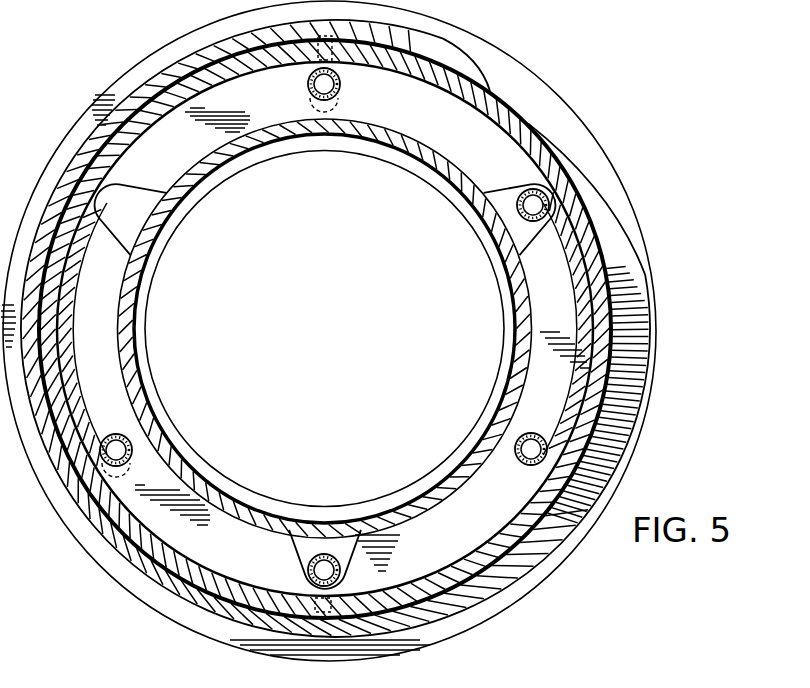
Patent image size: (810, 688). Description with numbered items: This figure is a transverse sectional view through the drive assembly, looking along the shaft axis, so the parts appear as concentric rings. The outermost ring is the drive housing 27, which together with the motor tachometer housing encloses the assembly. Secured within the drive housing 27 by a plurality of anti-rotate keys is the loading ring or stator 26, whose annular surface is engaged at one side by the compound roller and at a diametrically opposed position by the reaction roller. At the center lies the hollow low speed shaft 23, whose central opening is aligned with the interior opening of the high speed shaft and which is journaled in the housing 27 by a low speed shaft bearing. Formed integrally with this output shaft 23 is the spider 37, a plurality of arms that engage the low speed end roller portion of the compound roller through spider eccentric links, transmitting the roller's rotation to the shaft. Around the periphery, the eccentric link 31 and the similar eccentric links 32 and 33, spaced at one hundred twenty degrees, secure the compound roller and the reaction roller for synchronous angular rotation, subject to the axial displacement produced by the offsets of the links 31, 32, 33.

The hollow low speed shaft 23 is at (120, 300).
The loading ring 26 is at (170, 76).
The drive housing 27 is at (552, 90).
The eccentric link 31 is at (308, 85).
The eccentric link 32 is at (113, 432).
The eccentric link 33 is at (550, 193).
The spider 37 is at (152, 200).